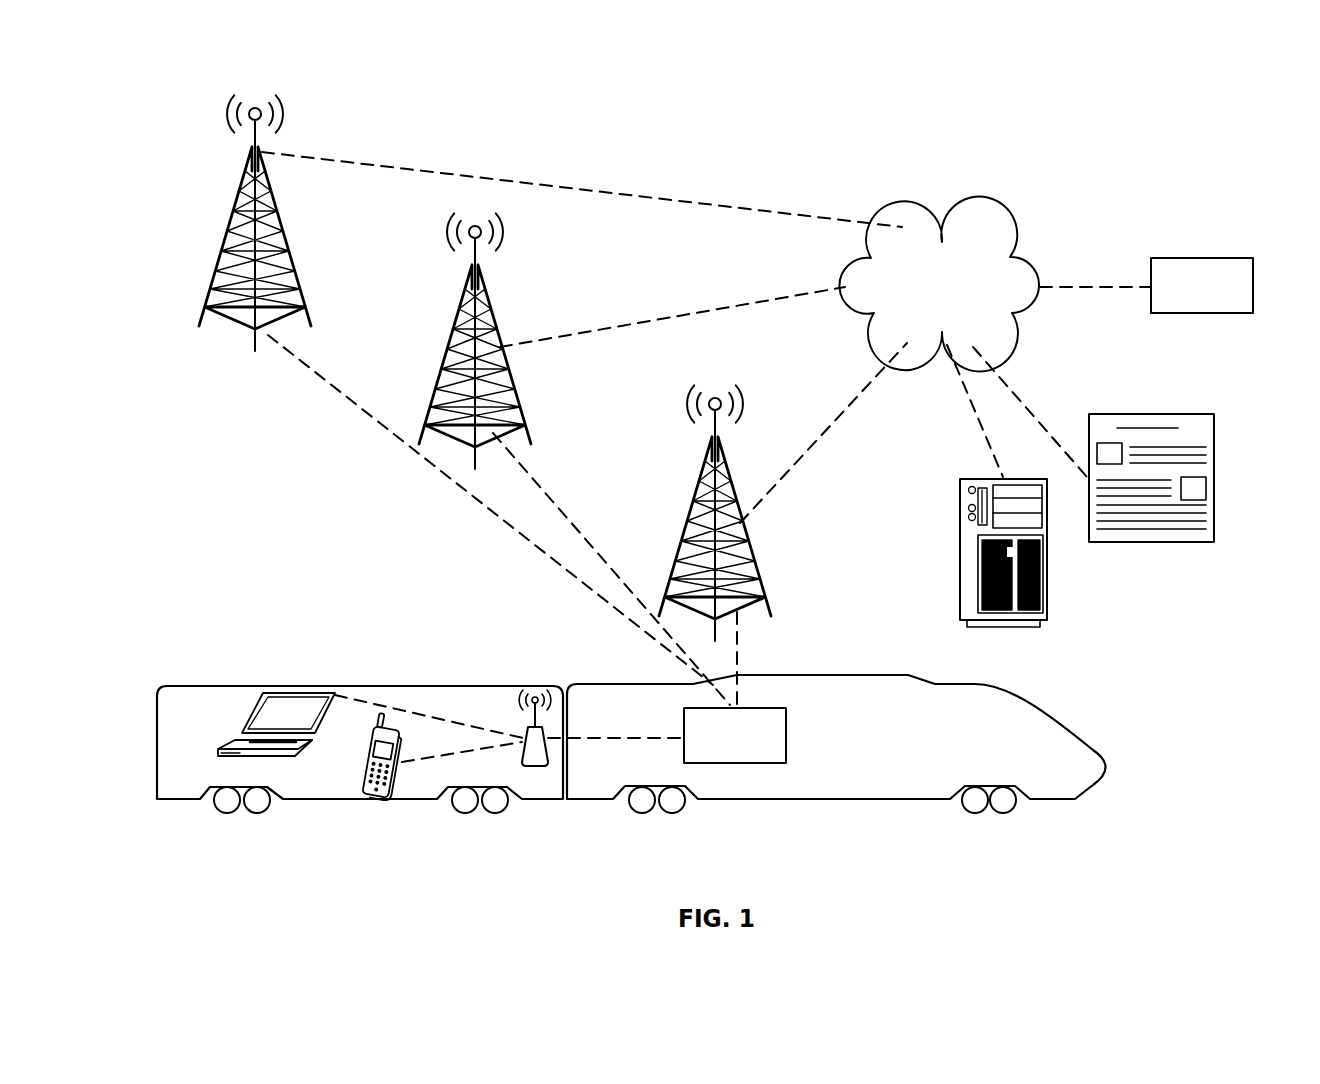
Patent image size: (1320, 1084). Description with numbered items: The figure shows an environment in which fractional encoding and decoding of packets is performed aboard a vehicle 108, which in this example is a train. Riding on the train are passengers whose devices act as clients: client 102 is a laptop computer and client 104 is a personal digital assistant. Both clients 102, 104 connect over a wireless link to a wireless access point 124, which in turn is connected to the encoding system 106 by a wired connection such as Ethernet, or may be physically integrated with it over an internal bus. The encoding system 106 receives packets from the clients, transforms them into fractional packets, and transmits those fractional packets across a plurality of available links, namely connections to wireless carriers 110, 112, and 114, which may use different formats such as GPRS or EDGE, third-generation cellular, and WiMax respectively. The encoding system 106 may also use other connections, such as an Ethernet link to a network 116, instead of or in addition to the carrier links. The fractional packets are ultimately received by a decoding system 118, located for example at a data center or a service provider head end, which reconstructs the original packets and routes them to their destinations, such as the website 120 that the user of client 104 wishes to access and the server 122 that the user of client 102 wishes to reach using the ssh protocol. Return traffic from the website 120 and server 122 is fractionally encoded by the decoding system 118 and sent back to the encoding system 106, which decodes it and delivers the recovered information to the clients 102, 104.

The client 102 is at (232, 742).
The client 104 is at (365, 785).
The encoding system 106 is at (786, 730).
The vehicle 108 is at (1050, 720).
The wireless carrier 110 is at (297, 290).
The wireless carrier 112 is at (485, 300).
The wireless carrier 114 is at (725, 472).
The network 116 is at (973, 228).
The decoding system 118 is at (1205, 258).
The website 120 is at (1153, 414).
The server 122 is at (1048, 610).
The wireless access point 124 is at (530, 730).